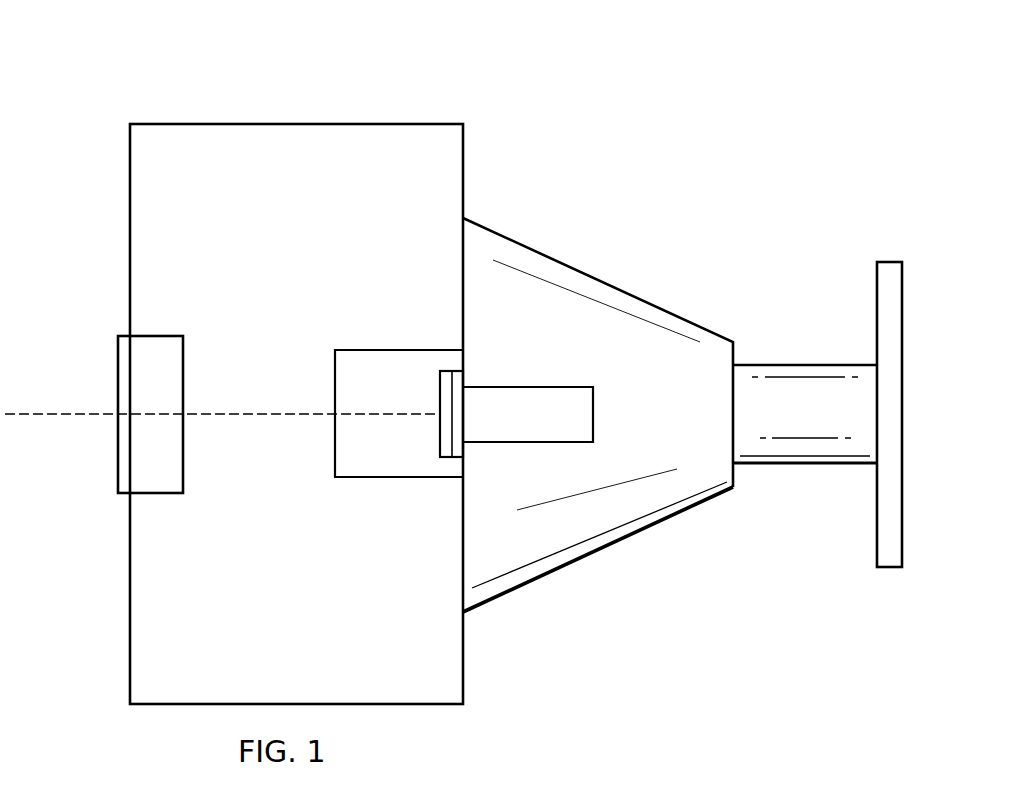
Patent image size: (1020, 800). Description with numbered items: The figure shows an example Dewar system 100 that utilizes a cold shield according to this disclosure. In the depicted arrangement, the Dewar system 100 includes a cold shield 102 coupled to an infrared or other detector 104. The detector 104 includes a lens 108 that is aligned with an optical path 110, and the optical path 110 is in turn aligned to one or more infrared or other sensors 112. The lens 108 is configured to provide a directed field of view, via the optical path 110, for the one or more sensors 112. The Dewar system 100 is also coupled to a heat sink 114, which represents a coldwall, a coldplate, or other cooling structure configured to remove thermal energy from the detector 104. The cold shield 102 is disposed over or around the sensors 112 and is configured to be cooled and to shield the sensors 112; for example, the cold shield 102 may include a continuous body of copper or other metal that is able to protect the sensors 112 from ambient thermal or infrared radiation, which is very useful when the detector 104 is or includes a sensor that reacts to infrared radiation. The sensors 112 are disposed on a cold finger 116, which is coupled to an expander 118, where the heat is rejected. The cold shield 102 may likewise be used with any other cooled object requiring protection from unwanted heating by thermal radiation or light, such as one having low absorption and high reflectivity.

The Dewar system 100 is at (230, 66).
The cold shield 102 is at (375, 350).
The detector 104 is at (130, 197).
The lens 108 is at (118, 462).
The optical path 110 is at (300, 413).
The sensors 112 is at (440, 389).
The heat sink 114 is at (888, 262).
The cold finger 116 is at (465, 380).
The expander 118 is at (594, 401).